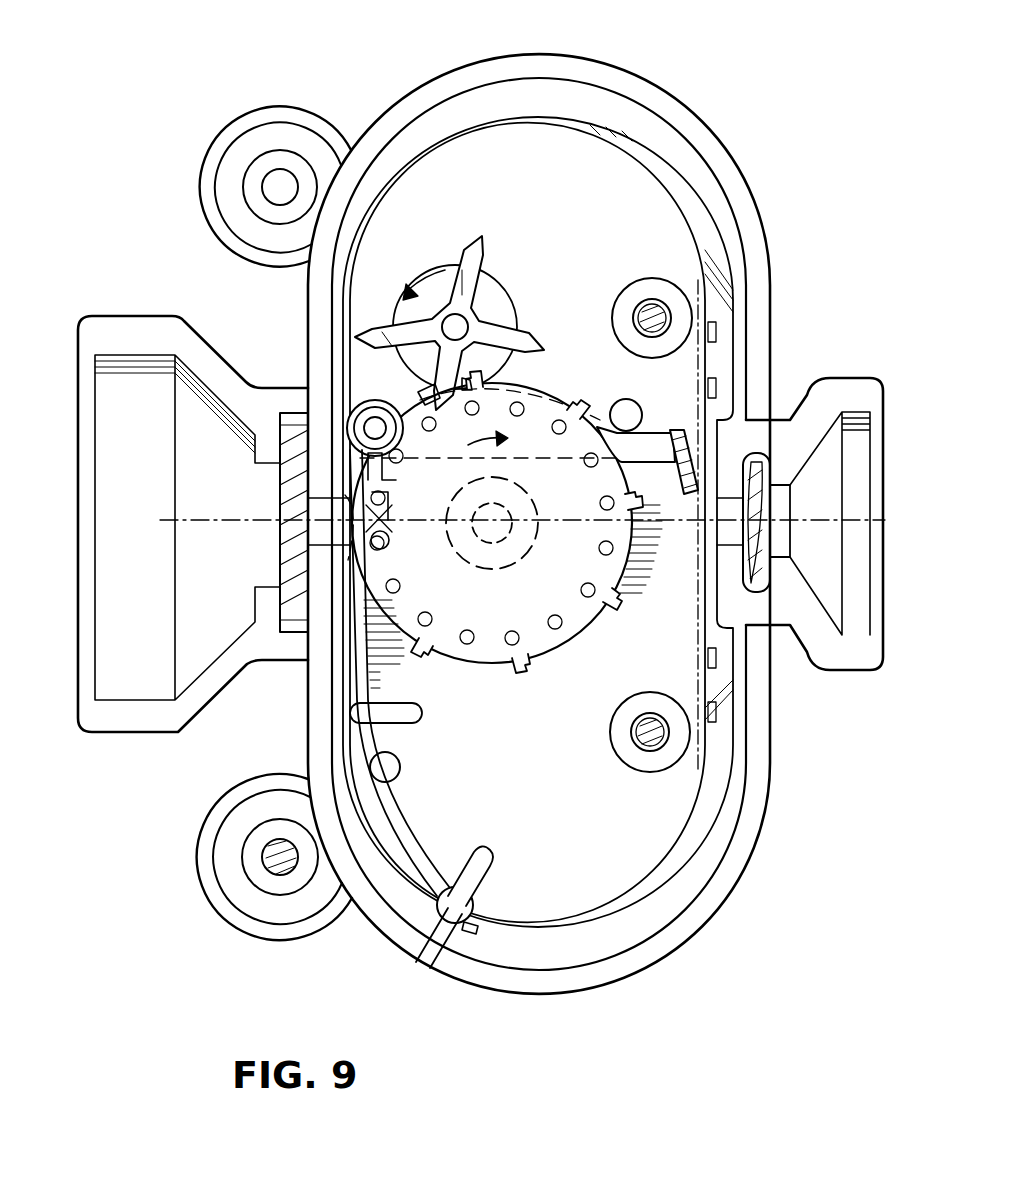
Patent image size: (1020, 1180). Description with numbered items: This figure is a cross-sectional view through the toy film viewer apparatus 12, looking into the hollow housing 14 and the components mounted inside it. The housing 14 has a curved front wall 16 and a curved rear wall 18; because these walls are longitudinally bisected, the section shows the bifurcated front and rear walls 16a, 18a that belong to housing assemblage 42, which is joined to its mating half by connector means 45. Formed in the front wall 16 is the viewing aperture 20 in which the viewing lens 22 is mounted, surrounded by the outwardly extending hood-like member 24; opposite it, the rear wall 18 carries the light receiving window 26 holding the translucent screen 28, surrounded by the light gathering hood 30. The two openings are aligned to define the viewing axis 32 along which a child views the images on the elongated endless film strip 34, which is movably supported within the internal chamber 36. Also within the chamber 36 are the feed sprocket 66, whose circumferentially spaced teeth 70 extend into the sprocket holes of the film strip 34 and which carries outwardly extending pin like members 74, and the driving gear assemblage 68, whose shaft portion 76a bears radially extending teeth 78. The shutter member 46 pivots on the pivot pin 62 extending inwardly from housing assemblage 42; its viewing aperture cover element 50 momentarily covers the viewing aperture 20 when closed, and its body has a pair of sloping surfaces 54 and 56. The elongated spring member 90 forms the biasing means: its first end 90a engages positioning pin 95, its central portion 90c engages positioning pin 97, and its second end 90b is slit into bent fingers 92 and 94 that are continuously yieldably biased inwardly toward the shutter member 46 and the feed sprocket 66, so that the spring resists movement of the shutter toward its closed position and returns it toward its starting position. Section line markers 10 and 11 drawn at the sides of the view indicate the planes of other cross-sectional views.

The section line 10- 10 is at (80, 318).
The section line 11- 11 is at (50, 560).
The toy film viewer apparatus 12 is at (726, 100).
The housing 14 is at (608, 66).
The front wall 16 is at (772, 766).
The bifurcated front wall 16a is at (770, 232).
The rear wall 18 is at (378, 940).
The bifurcated rear wall 18a is at (305, 304).
The viewing aperture 20 is at (790, 506).
The viewing lens 22 is at (780, 547).
The hood-like member 24 is at (836, 672).
The light receiving window 26 is at (283, 543).
The translucent screen 28 is at (280, 483).
The light gathering hood 30 is at (148, 316).
The viewing axis 32 is at (182, 522).
The endless film strip 34 is at (650, 186).
The internal chamber 36 is at (516, 100).
The housing assemblage 42 is at (752, 185).
The connector means 45 is at (276, 108).
The shutter member 46 is at (648, 430).
The viewing aperture cover element 50 is at (674, 488).
The sloping surface 54 is at (418, 392).
The sloping surface 56 is at (498, 390).
The pivot pin 62 is at (356, 418).
The feed sprocket 66 is at (586, 644).
The driving gear assemblage 68 is at (476, 237).
The teeth 70 is at (584, 404).
The pin like members 74 is at (590, 460).
The shaft portion 76a is at (505, 300).
The teeth 78 is at (458, 262).
The spring member 90 is at (396, 842).
The first end 90a is at (478, 890).
The second end 90b is at (385, 546).
The central portion 90c is at (372, 678).
The bent finger 92 is at (384, 470).
The bent finger 94 is at (386, 514).
The positioning pin 95 is at (440, 932).
The positioning pin 97 is at (400, 768).